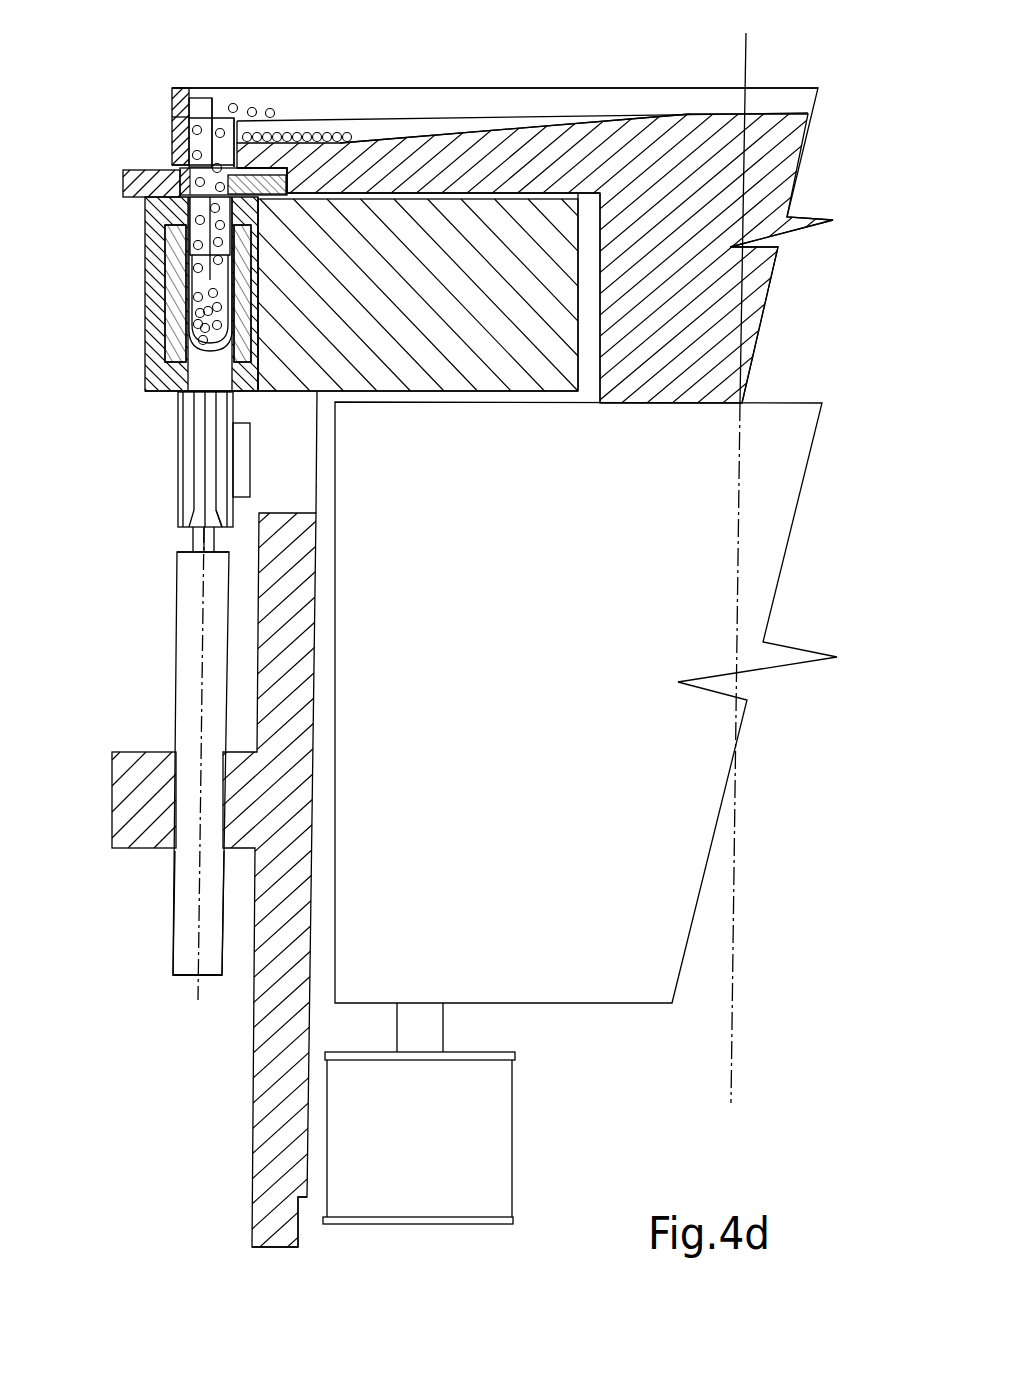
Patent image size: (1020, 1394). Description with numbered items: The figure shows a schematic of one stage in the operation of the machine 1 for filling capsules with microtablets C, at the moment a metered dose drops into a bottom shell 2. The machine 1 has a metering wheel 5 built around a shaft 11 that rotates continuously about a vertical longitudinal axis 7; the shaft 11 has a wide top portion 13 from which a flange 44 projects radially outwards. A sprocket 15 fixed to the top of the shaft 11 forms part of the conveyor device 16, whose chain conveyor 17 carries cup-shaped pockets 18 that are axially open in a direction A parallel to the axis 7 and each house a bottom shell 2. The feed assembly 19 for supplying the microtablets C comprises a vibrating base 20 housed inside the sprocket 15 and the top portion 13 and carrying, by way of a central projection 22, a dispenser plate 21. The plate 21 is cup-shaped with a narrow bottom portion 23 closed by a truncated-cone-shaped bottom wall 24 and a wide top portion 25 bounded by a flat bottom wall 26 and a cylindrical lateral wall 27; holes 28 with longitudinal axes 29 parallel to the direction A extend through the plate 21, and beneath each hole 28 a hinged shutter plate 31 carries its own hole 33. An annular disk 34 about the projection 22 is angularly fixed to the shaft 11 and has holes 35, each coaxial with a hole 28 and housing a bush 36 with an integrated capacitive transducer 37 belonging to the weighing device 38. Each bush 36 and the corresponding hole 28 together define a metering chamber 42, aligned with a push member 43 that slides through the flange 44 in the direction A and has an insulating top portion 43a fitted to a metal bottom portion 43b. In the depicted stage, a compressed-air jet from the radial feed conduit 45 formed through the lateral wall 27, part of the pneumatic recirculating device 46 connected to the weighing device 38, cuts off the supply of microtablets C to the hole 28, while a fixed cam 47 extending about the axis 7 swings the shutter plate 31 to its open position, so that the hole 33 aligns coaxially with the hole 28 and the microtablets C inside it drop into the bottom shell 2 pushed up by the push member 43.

The machine 1 is at (837, 76).
The bottom shell 2 is at (243, 384).
The metering wheel 5 is at (143, 945).
The longitudinal axis 7 is at (729, 1040).
The shaft 11 is at (255, 1147).
The wide top portion 13 is at (326, 700).
The sprocket 15 is at (250, 517).
The conveyor device 16 is at (149, 508).
The chain conveyor 17 is at (237, 480).
The pockets 18 is at (182, 462).
The feed assembly 19 is at (771, 72).
The vibrating base 20 is at (782, 500).
The dispenser plate 21 is at (570, 135).
The central projection 22 is at (762, 320).
The narrow bottom portion 23 is at (244, 124).
The bottom wall 24 is at (522, 112).
The wide top portion 25 is at (193, 94).
The bottom wall 26 is at (197, 112).
The lateral wall 27 is at (174, 92).
The holes 28 is at (220, 154).
The longitudinal axes 29 is at (197, 990).
The shutter plate 31 is at (282, 177).
The hole 33 is at (220, 184).
The annular disk 34 is at (548, 228).
The holes 35 is at (228, 392).
The bush 36 is at (163, 353).
The capacitive transducer 37 is at (172, 322).
The weighing device 38 is at (150, 292).
The metering chamber 42 is at (214, 224).
The push member 43 is at (152, 695).
The top portion 43a is at (198, 477).
The bottom portion 43b is at (180, 876).
The flange 44 is at (113, 828).
The radial feed conduit 45 is at (170, 111).
The pneumatic recirculating device 46 is at (147, 118).
The fixed cam 47 is at (128, 184).
The direction A is at (523, 1108).
The microtablets C is at (327, 135).